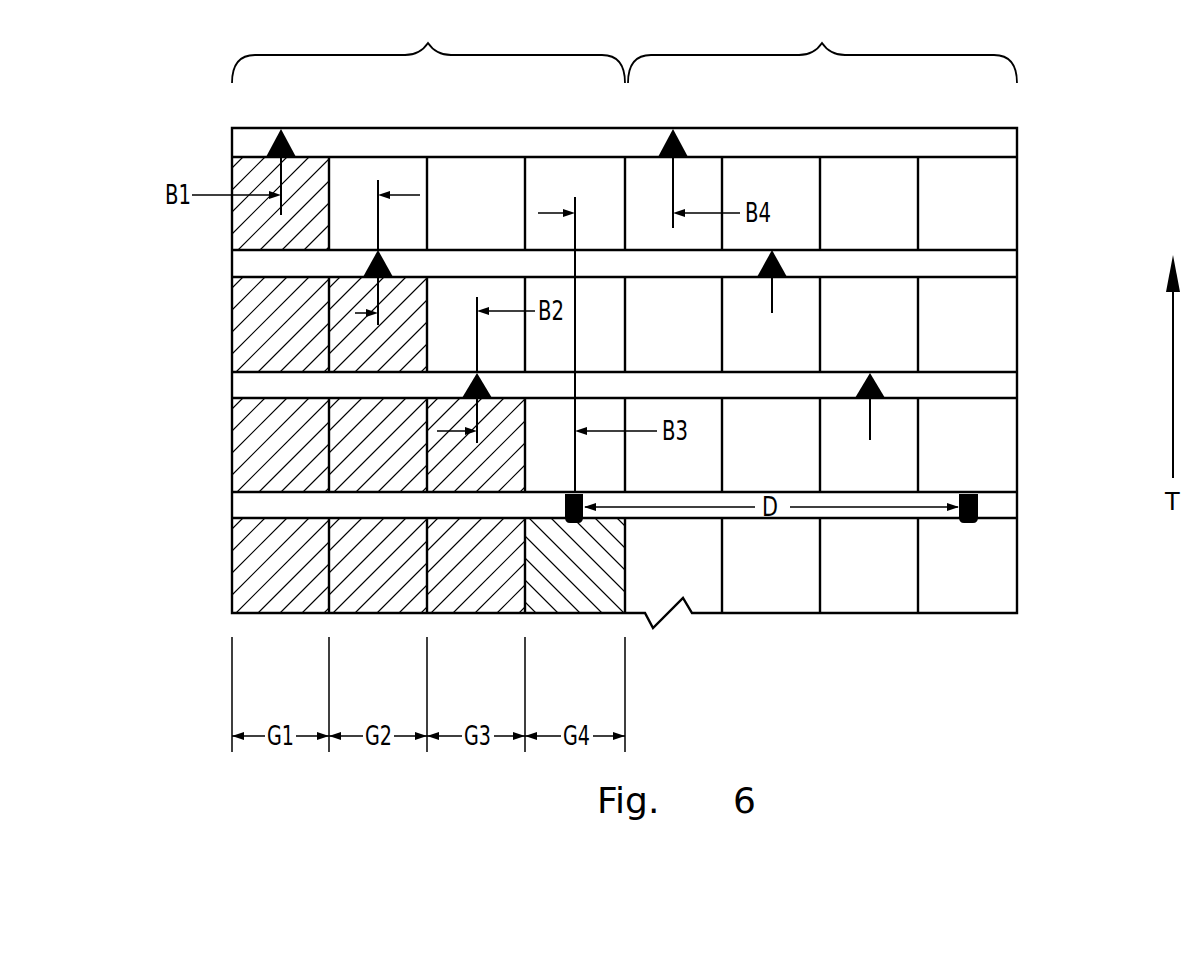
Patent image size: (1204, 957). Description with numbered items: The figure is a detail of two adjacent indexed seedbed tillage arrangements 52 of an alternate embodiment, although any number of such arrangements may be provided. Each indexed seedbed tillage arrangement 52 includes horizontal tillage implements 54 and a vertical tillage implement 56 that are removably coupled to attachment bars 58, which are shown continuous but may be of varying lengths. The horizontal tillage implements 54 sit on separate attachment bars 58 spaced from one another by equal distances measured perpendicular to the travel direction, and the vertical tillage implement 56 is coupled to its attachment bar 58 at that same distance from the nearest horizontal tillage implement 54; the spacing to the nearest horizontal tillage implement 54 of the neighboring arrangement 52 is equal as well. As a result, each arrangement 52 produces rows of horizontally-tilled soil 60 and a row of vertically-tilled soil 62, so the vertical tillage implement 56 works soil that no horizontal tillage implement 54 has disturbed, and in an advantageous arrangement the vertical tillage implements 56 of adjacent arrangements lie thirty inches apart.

The indexed seedbed tillage arrangement 52 is at (624, 47).
The horizontal tillage implement 54 is at (870, 438).
The vertical tillage implement 56 is at (980, 450).
The attachment bar 58 is at (1048, 492).
The row of horizontally-tilled soil 60 is at (247, 552).
The row of vertically-tilled soil 62 is at (596, 600).